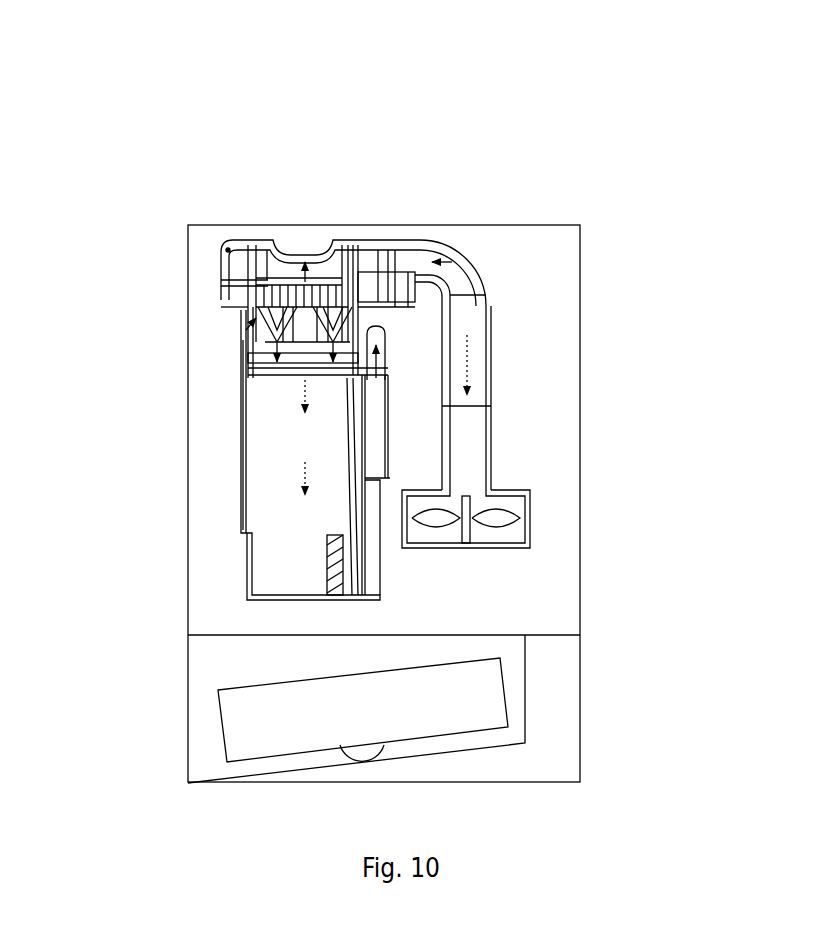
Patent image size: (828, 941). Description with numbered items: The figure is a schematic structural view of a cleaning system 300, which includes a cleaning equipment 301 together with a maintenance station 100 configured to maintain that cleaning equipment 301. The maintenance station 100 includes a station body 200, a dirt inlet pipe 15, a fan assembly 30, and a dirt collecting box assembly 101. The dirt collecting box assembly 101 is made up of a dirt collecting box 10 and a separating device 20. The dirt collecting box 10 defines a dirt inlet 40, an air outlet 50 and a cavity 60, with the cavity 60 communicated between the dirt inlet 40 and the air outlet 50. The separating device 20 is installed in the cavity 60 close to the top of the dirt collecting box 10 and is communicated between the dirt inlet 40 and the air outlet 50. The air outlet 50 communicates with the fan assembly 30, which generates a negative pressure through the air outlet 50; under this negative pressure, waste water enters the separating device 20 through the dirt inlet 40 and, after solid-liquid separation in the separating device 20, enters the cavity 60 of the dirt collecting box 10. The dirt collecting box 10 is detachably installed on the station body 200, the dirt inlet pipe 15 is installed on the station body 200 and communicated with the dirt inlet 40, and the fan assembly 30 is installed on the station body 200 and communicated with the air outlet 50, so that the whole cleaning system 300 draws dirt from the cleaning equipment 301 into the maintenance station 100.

The cleaning system 300 is at (582, 94).
The maintenance station 100 is at (549, 226).
The dirt collecting box assembly 101 is at (238, 432).
The station body 200 is at (581, 505).
The cleaning equipment 301 is at (240, 718).
The dirt collecting box 10 is at (247, 540).
The dirt inlet pipe 15 is at (377, 448).
The separating device 20 is at (247, 353).
The fan assembly 30 is at (500, 547).
The dirt inlet 40 is at (378, 268).
The air outlet 50 is at (447, 258).
The cavity 60 is at (250, 484).